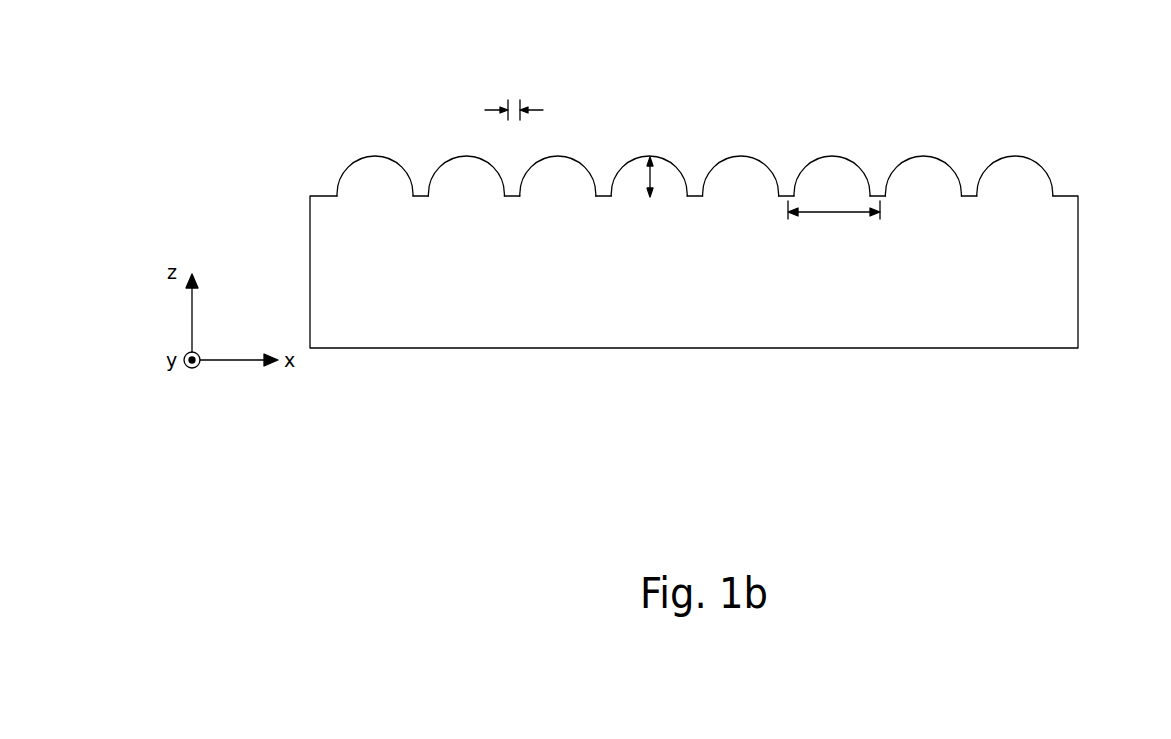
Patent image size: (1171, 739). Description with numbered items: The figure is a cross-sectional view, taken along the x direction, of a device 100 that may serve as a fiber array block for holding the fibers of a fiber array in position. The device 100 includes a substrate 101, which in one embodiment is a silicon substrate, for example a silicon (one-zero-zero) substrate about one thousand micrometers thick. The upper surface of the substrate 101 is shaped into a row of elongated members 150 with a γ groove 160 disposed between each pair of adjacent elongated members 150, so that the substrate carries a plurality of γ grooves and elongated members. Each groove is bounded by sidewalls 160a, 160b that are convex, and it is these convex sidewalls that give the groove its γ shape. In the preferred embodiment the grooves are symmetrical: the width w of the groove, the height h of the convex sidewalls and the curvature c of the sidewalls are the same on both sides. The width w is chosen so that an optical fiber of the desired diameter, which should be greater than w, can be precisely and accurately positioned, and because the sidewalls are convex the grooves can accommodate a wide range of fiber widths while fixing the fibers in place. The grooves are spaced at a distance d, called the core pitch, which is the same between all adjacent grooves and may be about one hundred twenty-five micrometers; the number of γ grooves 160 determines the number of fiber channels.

The device 100 is at (740, 254).
The substrate 101 is at (1078, 249).
The elongated member 150 is at (835, 157).
The γ groove 160 is at (603, 185).
The sidewall 160a is at (413, 161).
The sidewall 160b is at (428, 165).
The curvature c is at (497, 172).
The width w is at (514, 89).
The height h is at (659, 177).
The distance d is at (834, 224).